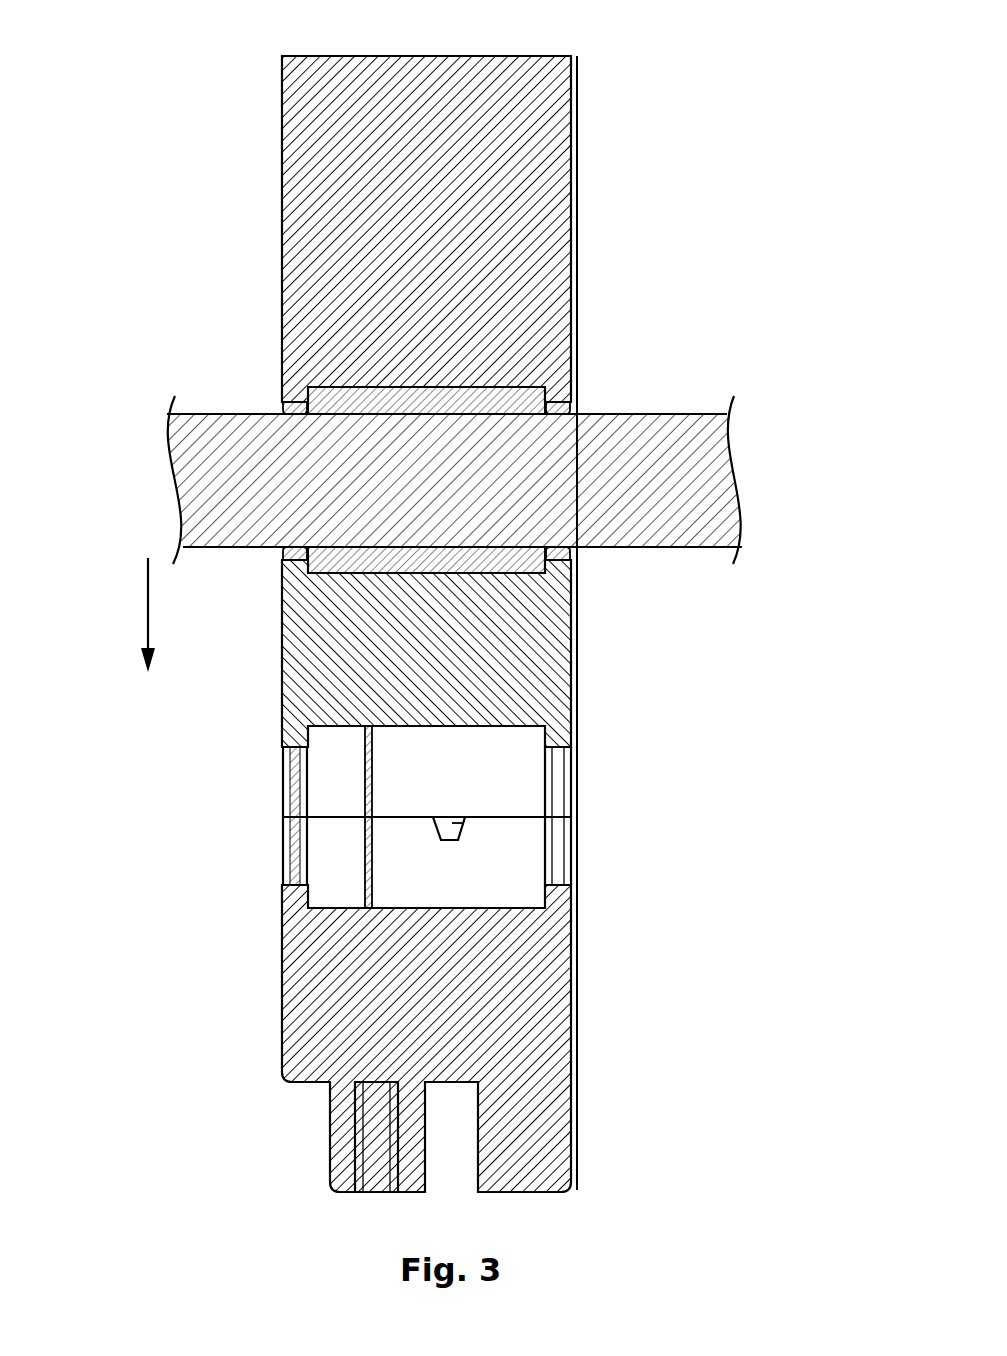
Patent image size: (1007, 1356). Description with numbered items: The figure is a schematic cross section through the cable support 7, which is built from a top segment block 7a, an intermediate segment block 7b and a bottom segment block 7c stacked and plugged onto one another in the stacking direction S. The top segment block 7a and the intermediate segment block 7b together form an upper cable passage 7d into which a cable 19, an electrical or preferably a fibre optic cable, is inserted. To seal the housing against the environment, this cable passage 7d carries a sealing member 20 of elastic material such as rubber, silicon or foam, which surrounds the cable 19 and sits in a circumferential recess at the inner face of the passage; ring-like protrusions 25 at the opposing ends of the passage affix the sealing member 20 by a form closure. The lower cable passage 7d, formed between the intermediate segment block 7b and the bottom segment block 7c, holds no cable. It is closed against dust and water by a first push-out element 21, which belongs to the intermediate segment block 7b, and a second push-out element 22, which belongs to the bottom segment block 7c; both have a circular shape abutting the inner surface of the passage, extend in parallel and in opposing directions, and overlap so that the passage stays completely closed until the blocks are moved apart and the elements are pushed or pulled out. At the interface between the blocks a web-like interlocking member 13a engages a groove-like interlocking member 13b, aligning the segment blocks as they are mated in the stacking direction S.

The cable support 7 is at (388, 597).
The top segment block 7a is at (548, 110).
The intermediate segment block 7b is at (296, 650).
The bottom segment block 7c is at (305, 972).
The cable passage 7d is at (206, 380).
The web-like interlocking member 13a is at (452, 823).
The groove-like interlocking member 13b is at (463, 832).
The cable 19 is at (700, 427).
The sealing member 20 is at (375, 378).
The first push-out element 21 is at (292, 758).
The second push-out element 22 is at (352, 818).
The ring-like protrusion 25 is at (290, 402).
The stacking direction S is at (148, 612).